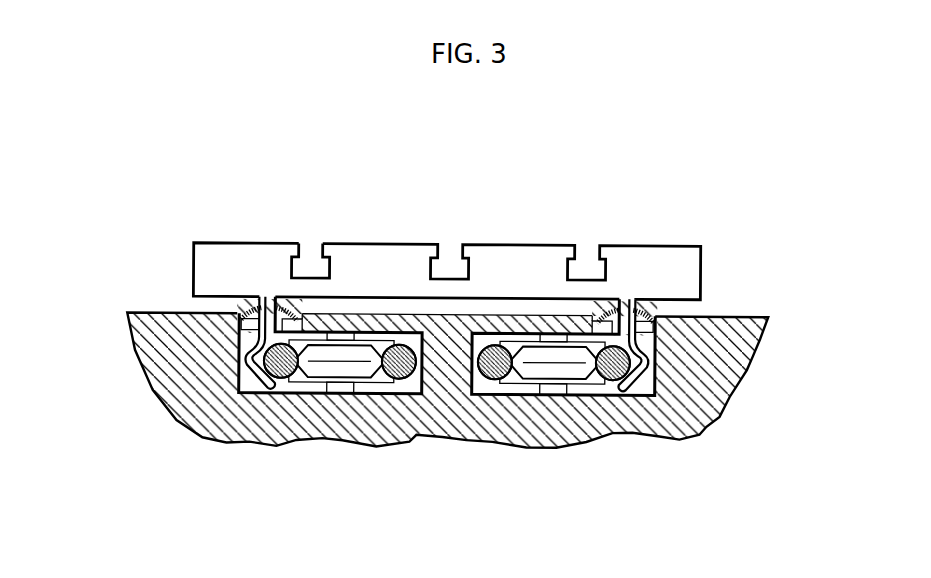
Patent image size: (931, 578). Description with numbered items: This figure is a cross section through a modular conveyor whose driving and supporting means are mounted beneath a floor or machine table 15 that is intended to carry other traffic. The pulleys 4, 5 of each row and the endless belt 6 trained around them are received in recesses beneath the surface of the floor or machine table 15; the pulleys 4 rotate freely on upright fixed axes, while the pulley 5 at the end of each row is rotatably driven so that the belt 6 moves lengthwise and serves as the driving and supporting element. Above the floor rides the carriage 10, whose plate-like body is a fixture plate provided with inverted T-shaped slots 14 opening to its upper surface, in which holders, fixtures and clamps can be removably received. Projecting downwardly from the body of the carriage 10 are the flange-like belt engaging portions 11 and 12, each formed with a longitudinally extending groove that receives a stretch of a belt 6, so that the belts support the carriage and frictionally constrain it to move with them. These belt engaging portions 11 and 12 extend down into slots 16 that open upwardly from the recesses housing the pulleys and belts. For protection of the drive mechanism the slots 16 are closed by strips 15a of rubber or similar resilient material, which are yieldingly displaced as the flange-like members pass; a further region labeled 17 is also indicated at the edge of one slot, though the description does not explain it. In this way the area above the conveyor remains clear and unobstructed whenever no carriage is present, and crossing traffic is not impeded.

The carriage 10 is at (508, 245).
The inverted T-shaped slots 14 is at (312, 247).
The floor or machine table 15 is at (172, 314).
The strips of rubber 15a is at (282, 314).
The slots 16 is at (246, 324).
The seal groove 17 is at (643, 327).
The belt engaging portion 11 is at (256, 384).
The belt engaging portion 12 is at (706, 421).
The pulleys 4 is at (456, 414).
The driven pulley 5 is at (319, 372).
The endless belt 6 is at (411, 378).